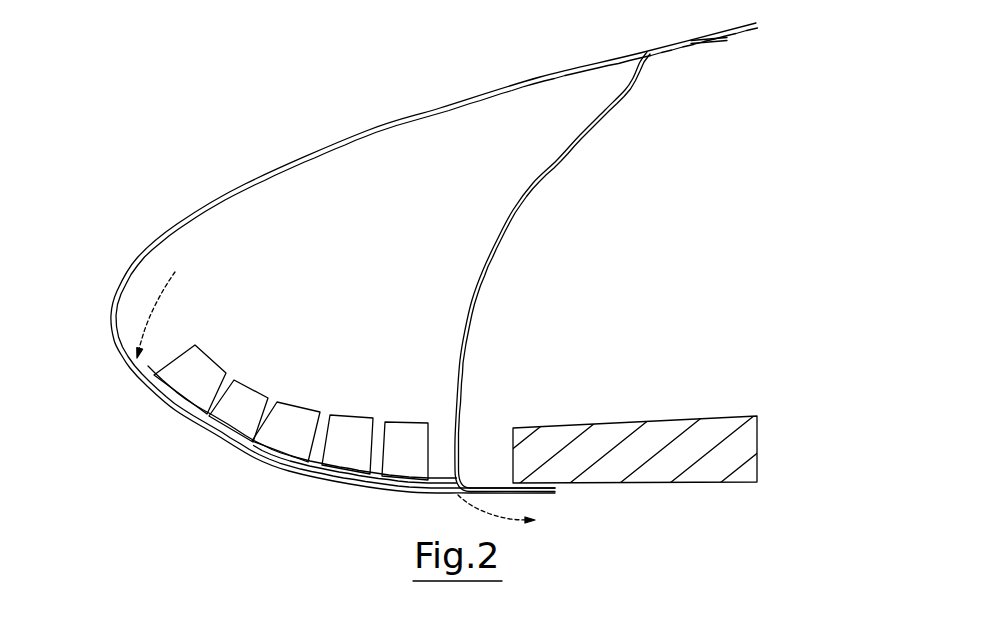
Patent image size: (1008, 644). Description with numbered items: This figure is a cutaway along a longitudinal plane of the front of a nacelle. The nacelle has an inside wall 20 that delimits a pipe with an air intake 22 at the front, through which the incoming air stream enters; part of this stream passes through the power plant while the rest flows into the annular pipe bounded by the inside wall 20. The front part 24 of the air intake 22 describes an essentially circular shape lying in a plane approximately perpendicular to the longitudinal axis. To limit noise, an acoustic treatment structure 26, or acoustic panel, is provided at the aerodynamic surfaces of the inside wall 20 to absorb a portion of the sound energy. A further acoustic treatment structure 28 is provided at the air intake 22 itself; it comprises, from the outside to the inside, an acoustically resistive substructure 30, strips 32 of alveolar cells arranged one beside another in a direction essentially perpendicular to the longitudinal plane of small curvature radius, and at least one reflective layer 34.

The inside wall 20 is at (673, 484).
The air intake 22 is at (192, 491).
The front part 24 is at (133, 262).
The acoustic treatment structure 26 is at (580, 428).
The acoustic treatment structure 28 is at (312, 397).
The acoustically resistive substructure 30 is at (254, 464).
The strips of alveolar cells 32 is at (203, 368).
The reflective layer 34 is at (198, 347).